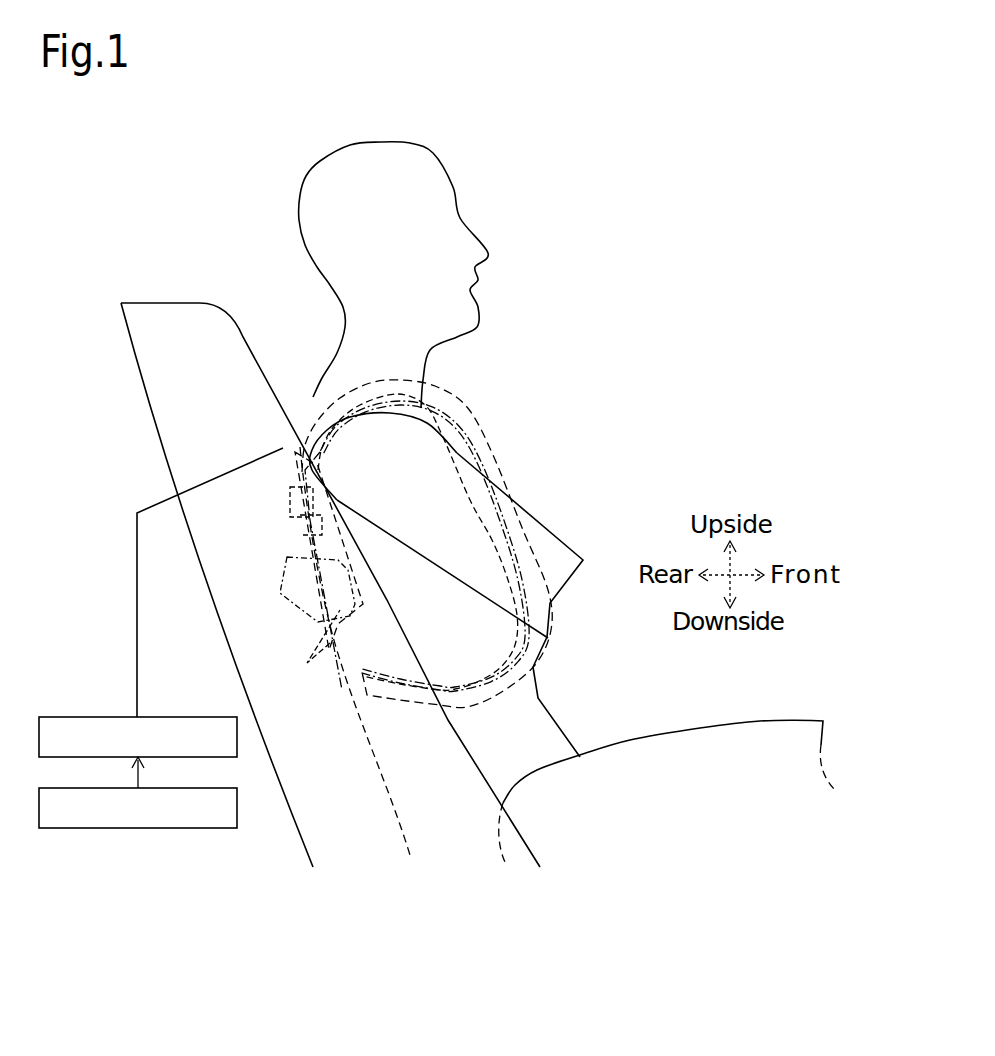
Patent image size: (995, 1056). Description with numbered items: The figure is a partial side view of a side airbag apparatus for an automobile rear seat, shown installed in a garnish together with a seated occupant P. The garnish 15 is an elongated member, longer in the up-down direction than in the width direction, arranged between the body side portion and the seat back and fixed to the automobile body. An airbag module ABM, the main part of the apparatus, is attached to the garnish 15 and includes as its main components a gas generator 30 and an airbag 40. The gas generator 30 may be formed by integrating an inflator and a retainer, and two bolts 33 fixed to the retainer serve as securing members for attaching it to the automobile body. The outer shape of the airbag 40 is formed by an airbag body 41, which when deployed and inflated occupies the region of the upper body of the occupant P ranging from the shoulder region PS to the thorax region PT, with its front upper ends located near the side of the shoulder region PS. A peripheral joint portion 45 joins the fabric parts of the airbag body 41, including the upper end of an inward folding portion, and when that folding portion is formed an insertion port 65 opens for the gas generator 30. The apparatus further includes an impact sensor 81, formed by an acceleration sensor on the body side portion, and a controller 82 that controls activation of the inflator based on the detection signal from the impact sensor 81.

The garnish 15 is at (160, 303).
The occupant P is at (319, 164).
The shoulder region PS is at (368, 422).
The airbag body 41 is at (462, 402).
The airbag 40 is at (455, 544).
The peripheral joint portion 45 is at (465, 428).
The thorax region PT is at (515, 500).
The airbag module ABM is at (283, 496).
The insertion port 65 is at (300, 526).
The bolts 33 is at (282, 597).
The gas generator 30 is at (330, 650).
The controller 82 is at (173, 717).
The impact sensor 81 is at (165, 829).